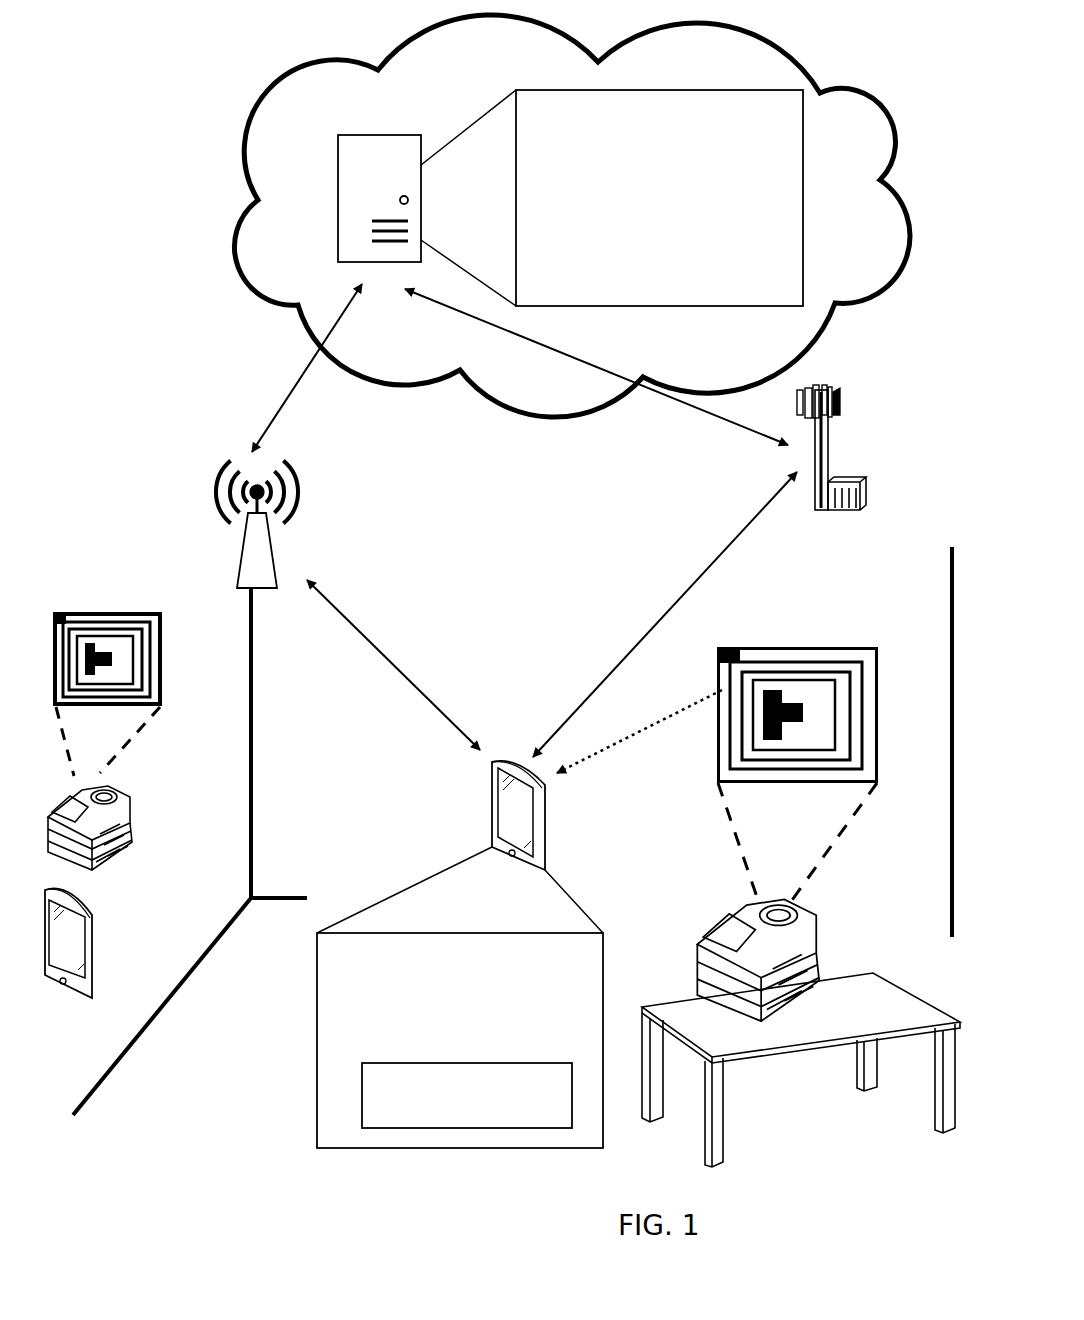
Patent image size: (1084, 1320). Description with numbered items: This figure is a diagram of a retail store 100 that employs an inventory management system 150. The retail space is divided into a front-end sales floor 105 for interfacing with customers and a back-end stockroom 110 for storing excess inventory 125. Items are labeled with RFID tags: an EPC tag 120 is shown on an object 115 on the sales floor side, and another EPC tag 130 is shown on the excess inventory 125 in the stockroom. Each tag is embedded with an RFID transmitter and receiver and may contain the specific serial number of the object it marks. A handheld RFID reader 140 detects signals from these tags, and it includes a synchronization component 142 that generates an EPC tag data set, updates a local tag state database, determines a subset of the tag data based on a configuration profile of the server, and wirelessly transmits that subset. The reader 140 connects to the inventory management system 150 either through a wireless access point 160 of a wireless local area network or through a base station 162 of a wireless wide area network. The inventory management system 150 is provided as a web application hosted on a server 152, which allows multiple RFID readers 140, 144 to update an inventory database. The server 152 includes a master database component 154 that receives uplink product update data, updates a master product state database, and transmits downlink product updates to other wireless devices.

The retail store 100 is at (205, 405).
The sales floor 105 is at (476, 570).
The stockroom 110 is at (103, 560).
The object 115 is at (697, 947).
The EPC tag 120 is at (849, 647).
The excess inventory 125 is at (93, 776).
The EPC tag 130 is at (150, 605).
The handheld RFID reader 140 is at (503, 762).
The synchronization component 142 is at (468, 1063).
The RFID reader 144 is at (86, 1000).
The inventory management system 150 is at (750, 36).
The server 152 is at (365, 135).
The master database component 154 is at (641, 90).
The wireless access point 160 is at (277, 578).
The base station 162 is at (845, 474).